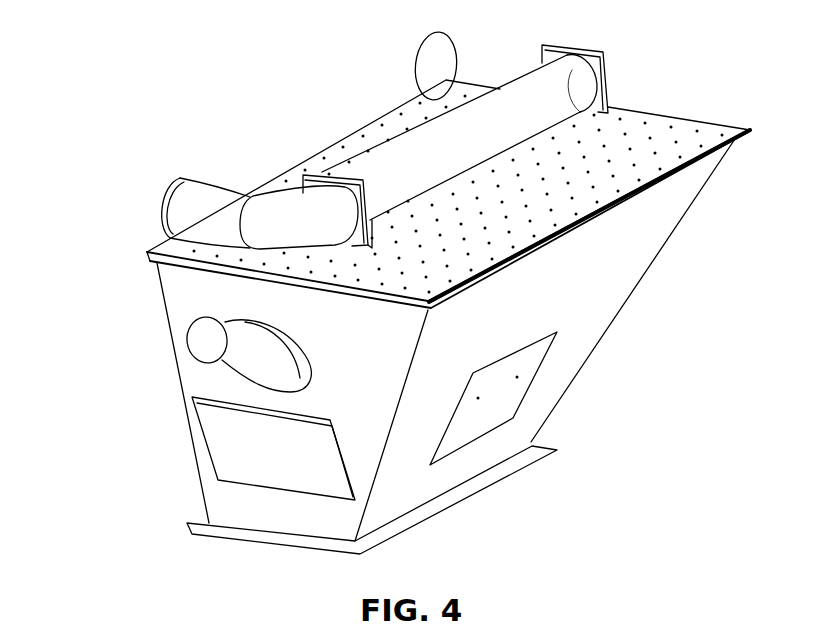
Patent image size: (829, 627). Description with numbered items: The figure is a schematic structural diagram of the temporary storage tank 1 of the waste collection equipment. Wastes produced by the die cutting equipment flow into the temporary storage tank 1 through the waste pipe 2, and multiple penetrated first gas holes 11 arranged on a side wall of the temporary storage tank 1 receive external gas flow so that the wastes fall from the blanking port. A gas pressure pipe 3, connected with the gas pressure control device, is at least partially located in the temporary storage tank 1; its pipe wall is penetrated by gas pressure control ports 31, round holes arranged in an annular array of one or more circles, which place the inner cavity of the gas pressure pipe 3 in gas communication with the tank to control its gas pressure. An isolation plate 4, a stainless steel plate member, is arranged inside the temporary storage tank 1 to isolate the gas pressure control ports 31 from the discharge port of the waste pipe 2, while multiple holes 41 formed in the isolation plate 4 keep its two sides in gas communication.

The temporary storage tank 1 is at (575, 277).
The first gas holes 11 is at (520, 378).
The waste pipe 2 is at (245, 364).
The gas pressure pipe 3 is at (373, 177).
The gas pressure control port 31 is at (403, 168).
The isolation plate 4 is at (422, 111).
The holes 41 is at (460, 100).